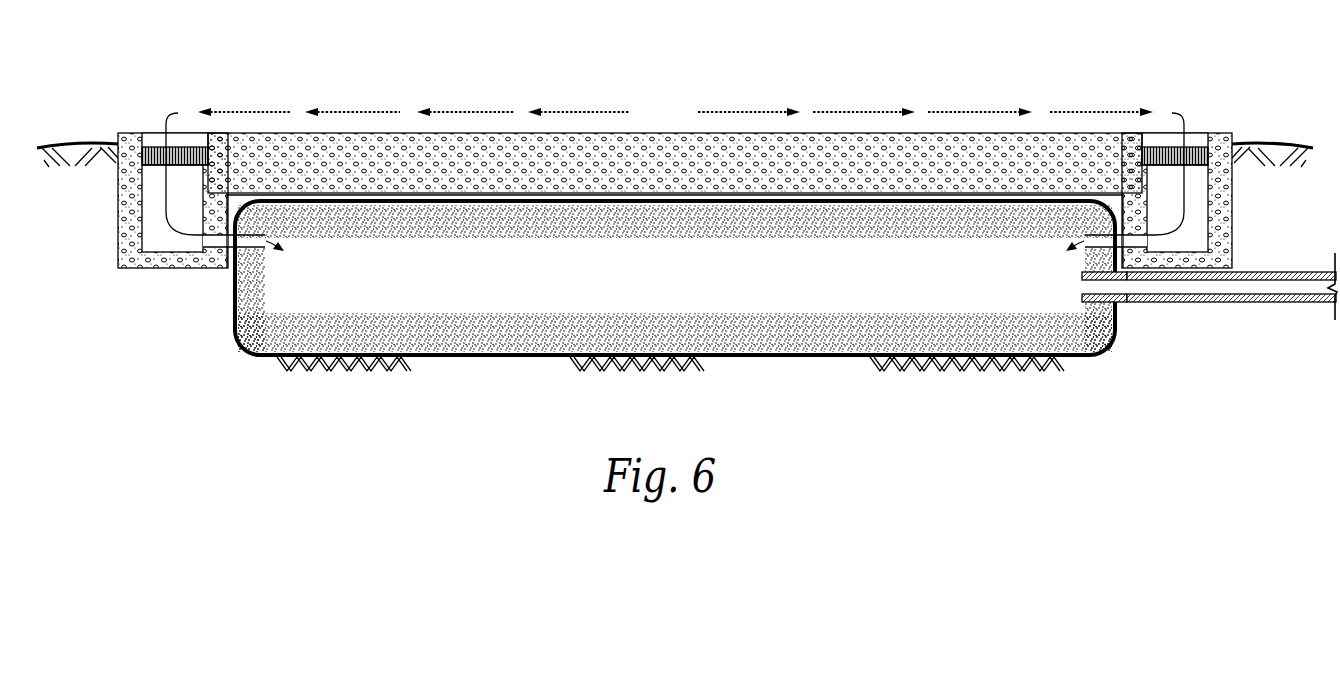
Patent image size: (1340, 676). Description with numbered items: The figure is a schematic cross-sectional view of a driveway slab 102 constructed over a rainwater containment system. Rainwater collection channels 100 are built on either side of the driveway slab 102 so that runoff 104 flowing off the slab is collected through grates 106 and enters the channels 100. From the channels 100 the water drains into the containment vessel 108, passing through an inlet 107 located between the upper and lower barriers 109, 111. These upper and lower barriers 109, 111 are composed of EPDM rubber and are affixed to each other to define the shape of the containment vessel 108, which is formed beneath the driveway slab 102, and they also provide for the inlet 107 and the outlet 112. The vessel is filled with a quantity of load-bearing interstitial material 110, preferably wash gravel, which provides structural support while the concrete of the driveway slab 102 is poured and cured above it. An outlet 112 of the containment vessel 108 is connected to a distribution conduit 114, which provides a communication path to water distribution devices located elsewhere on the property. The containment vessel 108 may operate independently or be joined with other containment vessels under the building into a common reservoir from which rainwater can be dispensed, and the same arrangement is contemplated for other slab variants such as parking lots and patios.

The rainwater collection channel 100 is at (153, 123).
The driveway slab 102 is at (695, 175).
The runoff 104 is at (387, 110).
The grate 106 is at (152, 167).
The inlet 107 is at (237, 253).
The containment vessel 108 is at (427, 360).
The upper barrier 109 is at (797, 205).
The load-bearing interstitial material 110 is at (697, 290).
The lower barrier 111 is at (743, 353).
The outlet 112 is at (1118, 303).
The distribution conduit 114 is at (1292, 302).